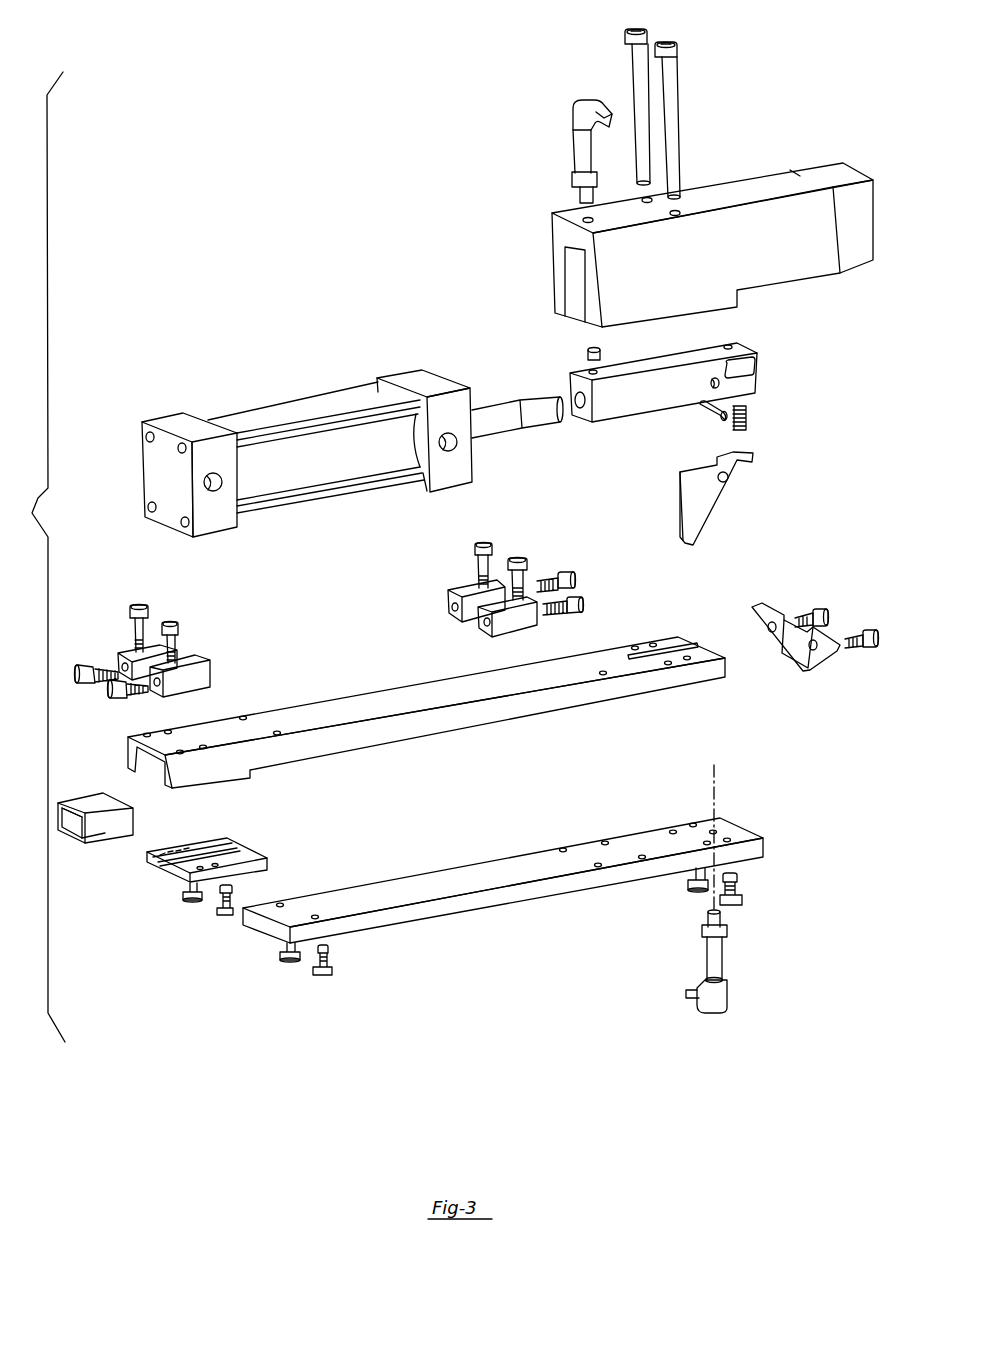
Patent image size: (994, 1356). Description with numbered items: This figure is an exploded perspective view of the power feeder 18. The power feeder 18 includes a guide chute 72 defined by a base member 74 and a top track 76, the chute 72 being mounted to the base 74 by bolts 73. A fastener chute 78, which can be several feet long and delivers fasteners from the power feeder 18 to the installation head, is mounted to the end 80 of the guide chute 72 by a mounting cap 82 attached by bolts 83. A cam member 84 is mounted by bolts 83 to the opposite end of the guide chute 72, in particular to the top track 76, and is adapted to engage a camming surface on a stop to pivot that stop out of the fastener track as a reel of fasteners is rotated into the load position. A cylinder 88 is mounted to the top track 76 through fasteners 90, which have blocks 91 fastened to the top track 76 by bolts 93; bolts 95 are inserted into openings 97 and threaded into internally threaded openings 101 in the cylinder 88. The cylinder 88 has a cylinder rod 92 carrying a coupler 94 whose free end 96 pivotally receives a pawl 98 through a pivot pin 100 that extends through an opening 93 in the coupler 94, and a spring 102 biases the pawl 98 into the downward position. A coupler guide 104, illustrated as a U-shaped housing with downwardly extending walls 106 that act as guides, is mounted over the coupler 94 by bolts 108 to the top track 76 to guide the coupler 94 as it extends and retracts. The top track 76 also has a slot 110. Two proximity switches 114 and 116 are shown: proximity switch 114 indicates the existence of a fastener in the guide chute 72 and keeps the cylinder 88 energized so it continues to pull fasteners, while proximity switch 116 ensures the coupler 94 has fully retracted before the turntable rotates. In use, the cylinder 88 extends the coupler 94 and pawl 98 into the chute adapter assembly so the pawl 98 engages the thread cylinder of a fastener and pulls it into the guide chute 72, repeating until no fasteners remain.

The power feeder 18 is at (38, 498).
The guide chute 72 is at (210, 993).
The bolts 73 is at (289, 962).
The base member 74 is at (395, 915).
The top track 76 is at (376, 704).
The fastener chute 78 is at (100, 838).
The end of guide chute 80 is at (128, 750).
The mounting cap 82 is at (232, 845).
The bolts 83 is at (866, 635).
The cam member 84 is at (818, 665).
The cylinder 88 is at (172, 412).
The fasteners 90 is at (348, 620).
The blocks 91 is at (205, 675).
The cylinder rod 92 is at (497, 410).
The bolts 93 is at (720, 383).
The coupler 94 is at (643, 400).
The bolts 95 is at (80, 665).
The free end 96 is at (752, 353).
The openings 97 is at (144, 669).
The pawl 98 is at (730, 492).
The pivot pin 100 is at (708, 413).
The openings 101 is at (166, 522).
The spring 102 is at (748, 416).
The coupler guide 104 is at (540, 216).
The downwardly extending walls 106 is at (555, 262).
The bolts 108 is at (670, 83).
The slot 110 is at (672, 637).
The proximity switch 114 is at (725, 1005).
The proximity switch 116 is at (577, 128).